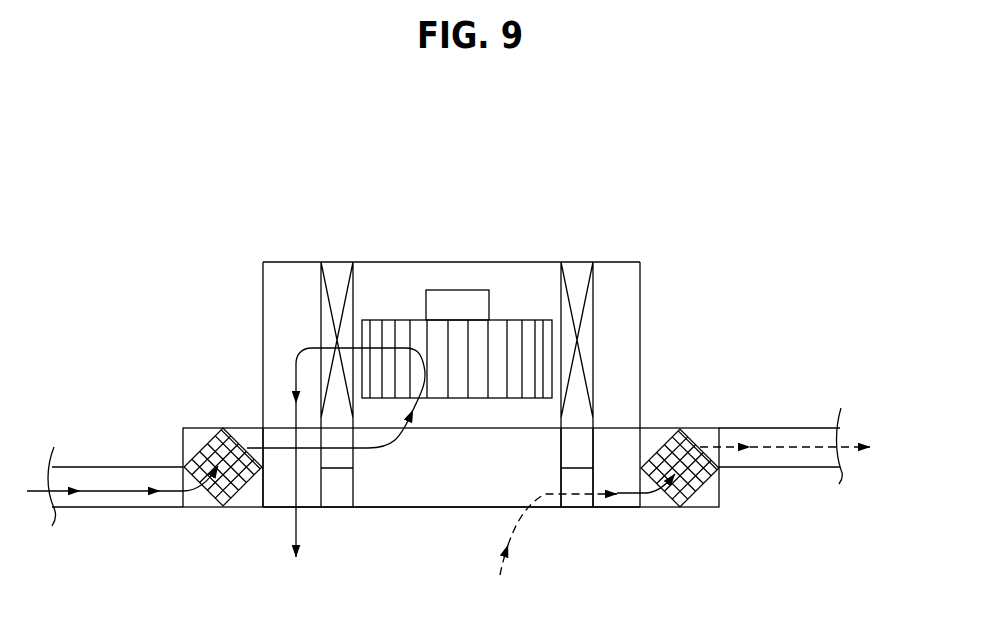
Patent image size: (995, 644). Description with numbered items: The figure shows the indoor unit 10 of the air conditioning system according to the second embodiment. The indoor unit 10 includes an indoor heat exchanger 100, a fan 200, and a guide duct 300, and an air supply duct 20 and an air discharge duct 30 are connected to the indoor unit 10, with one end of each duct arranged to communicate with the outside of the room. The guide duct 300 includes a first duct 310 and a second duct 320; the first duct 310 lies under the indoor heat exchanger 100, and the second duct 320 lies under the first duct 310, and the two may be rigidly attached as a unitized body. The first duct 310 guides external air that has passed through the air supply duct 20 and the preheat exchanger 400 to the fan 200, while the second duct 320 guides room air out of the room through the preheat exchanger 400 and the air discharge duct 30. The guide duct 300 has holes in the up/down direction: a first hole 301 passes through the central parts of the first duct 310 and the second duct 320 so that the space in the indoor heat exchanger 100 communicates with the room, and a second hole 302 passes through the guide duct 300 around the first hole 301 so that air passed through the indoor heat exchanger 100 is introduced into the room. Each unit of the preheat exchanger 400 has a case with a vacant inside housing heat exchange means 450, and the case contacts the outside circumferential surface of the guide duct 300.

The indoor unit 10 is at (472, 261).
The air supply duct 20 is at (106, 478).
The air discharge duct 30 is at (797, 433).
The indoor heat exchanger 100 is at (588, 316).
The fan 200 is at (527, 362).
The guide duct 300 is at (609, 510).
The first hole 301 is at (427, 508).
The second hole 302 is at (278, 500).
The first duct 310 is at (589, 442).
The second duct 320 is at (575, 508).
The preheat exchanger 400 is at (228, 509).
The heat exchange means 450 is at (198, 498).